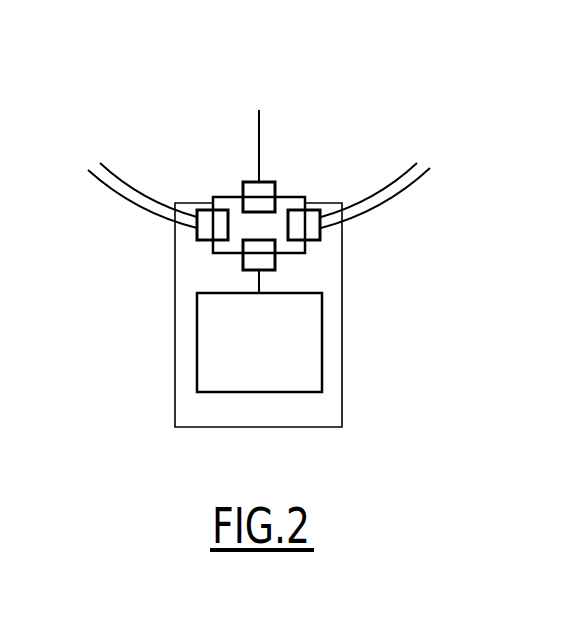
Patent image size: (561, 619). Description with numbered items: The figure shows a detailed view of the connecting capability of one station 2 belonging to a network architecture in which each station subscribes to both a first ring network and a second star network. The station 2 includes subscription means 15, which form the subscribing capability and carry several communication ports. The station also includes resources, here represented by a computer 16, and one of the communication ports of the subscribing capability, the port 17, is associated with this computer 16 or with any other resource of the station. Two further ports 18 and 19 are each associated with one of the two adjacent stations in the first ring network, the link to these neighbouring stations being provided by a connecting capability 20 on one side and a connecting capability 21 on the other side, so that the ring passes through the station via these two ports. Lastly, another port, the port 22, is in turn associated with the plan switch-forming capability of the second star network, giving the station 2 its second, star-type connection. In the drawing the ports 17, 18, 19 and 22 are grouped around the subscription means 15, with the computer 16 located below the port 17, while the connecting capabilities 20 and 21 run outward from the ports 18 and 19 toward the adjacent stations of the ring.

The station 2 is at (135, 358).
The subscription means 15 is at (290, 107).
The computer 16 is at (202, 400).
The port 17 is at (230, 265).
The port 18 is at (192, 205).
The port 19 is at (330, 202).
The connecting capability 20 is at (185, 247).
The connecting capability 21 is at (332, 232).
The port 22 is at (273, 172).